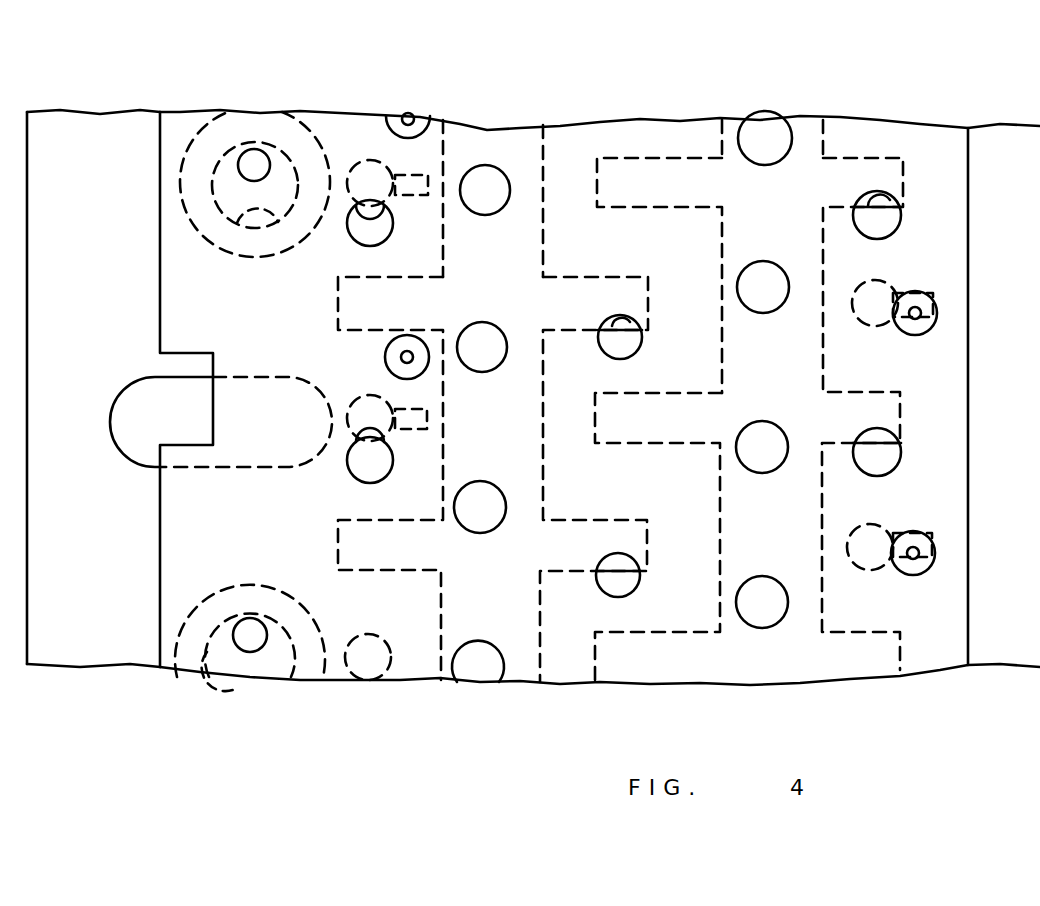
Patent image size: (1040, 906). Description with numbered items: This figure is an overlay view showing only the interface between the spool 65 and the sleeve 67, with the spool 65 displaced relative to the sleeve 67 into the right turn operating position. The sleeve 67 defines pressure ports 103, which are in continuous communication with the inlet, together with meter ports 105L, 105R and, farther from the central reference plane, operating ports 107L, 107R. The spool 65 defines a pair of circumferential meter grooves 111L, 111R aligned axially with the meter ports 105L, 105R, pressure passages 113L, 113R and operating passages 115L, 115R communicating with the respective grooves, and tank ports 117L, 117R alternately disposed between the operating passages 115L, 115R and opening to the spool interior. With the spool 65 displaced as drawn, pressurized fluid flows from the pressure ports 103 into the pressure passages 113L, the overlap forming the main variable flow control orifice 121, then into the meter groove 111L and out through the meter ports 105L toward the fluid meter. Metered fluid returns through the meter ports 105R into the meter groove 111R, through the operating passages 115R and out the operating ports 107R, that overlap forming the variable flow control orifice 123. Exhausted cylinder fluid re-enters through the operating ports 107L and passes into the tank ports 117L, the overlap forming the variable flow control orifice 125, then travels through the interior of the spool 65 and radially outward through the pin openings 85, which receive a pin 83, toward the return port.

The spool 65 is at (104, 132).
The sleeve 67 is at (178, 134).
The pin 83 is at (252, 176).
The pin openings 85 is at (240, 222).
The pressure ports 103 is at (610, 354).
The left meter ports 105L is at (470, 175).
The right meter ports 105R is at (768, 150).
The left operating ports 107L is at (378, 240).
The right operating ports 107R is at (866, 234).
The left meter groove 111L is at (493, 401).
The right meter groove 111R is at (772, 374).
The left pressure passages 113L is at (580, 300).
The right pressure passages 113R is at (664, 178).
The left operating passages 115L is at (338, 533).
The right operating passages 115R is at (868, 178).
The left tank ports 117L is at (378, 412).
The right tank ports 117R is at (875, 330).
The main variable flow control orifice 121 is at (622, 324).
The variable flow control orifice 123 is at (882, 205).
The variable flow control orifice 125 is at (372, 450).